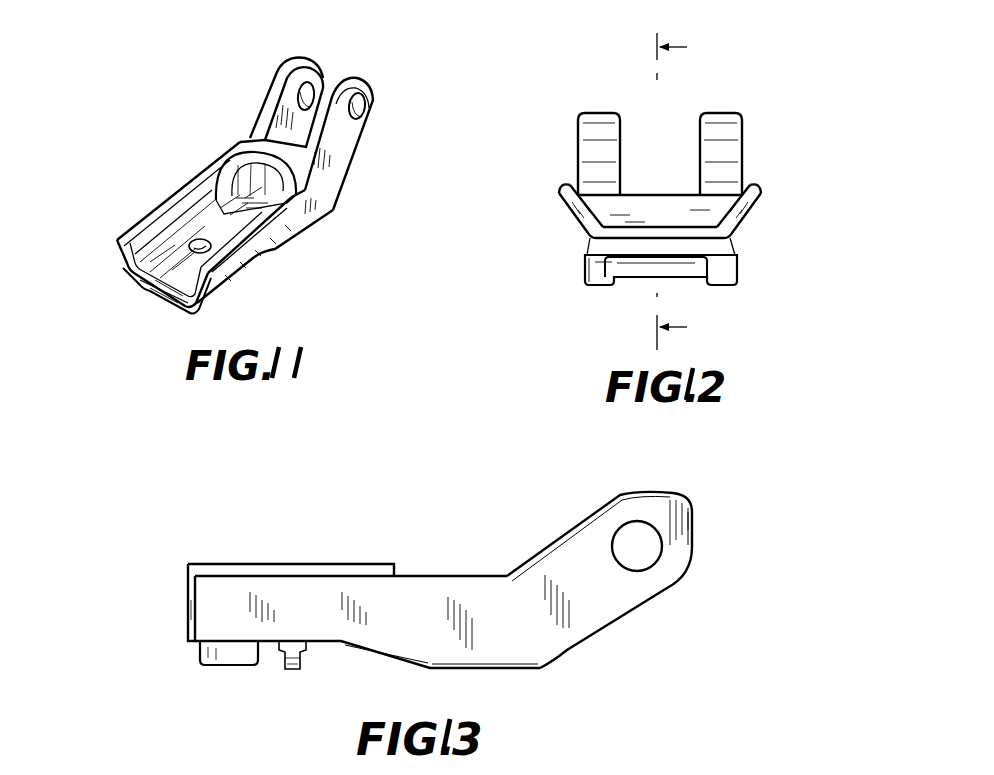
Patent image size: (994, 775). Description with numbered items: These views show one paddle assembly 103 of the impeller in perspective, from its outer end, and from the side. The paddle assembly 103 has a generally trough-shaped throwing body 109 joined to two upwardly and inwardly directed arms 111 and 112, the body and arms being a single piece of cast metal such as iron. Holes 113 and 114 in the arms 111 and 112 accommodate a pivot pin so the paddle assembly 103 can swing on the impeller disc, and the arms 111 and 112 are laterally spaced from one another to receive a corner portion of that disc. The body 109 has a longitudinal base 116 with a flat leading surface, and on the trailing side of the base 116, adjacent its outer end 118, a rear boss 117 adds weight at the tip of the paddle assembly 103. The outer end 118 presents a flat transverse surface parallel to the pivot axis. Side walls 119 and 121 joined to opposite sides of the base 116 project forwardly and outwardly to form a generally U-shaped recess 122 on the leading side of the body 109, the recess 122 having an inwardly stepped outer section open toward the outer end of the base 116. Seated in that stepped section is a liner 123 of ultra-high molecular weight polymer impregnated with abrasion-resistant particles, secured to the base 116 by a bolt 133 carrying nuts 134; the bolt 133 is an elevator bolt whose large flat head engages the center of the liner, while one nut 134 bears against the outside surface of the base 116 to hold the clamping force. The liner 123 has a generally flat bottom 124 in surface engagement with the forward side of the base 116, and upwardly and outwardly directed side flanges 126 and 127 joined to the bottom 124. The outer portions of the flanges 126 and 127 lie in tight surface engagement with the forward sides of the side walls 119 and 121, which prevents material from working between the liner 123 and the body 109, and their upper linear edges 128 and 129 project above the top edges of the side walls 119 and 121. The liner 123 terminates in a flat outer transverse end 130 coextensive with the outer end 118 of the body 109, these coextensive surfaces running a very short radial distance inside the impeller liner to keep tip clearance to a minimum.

In FIG. 11, the paddle assembly 103 is at (247, 184).
In FIG. 12, the paddle assembly 103 is at (674, 191).
In FIG. 13, the paddle assembly 103 is at (435, 579).
In FIG. 11, the throwing body 109 is at (307, 210).
In FIG. 13, the throwing body 109 is at (512, 642).
In FIG. 11, the arm 111 is at (288, 88).
In FIG. 12, the arm 111 is at (592, 138).
In FIG. 11, the arm 112 is at (372, 146).
In FIG. 12, the arm 112 is at (725, 123).
In FIG. 13, the arm 112 is at (683, 574).
In FIG. 11, the hole 113 is at (313, 82).
In FIG. 11, the hole 114 is at (368, 105).
In FIG. 13, the hole 114 is at (650, 546).
In FIG. 13, the longitudinal base 116 is at (320, 622).
In FIG. 11, the rear boss 117 is at (187, 305).
In FIG. 12, the rear boss 117 is at (673, 268).
In FIG. 13, the rear boss 117 is at (228, 666).
In FIG. 11, the outer end 118 is at (147, 293).
In FIG. 12, the outer end 118 is at (603, 260).
In FIG. 13, the outer end 118 is at (190, 620).
In FIG. 11, the side wall 119 is at (123, 263).
In FIG. 12, the side wall 119 is at (572, 235).
In FIG. 11, the side wall 121 is at (237, 260).
In FIG. 12, the side wall 121 is at (693, 233).
In FIG. 11, the recess 122 is at (222, 182).
In FIG. 11, the liner 123 is at (158, 233).
In FIG. 12, the liner 123 is at (620, 222).
In FIG. 13, the liner 123 is at (241, 560).
In FIG. 12, the bottom 124 is at (737, 265).
In FIG. 12, the side flange 126 is at (570, 212).
In FIG. 12, the side flange 127 is at (757, 215).
In FIG. 12, the upper linear edge 128 is at (570, 187).
In FIG. 12, the upper linear edge 129 is at (753, 203).
In FIG. 13, the upper linear edge 129 is at (327, 565).
In FIG. 11, the outer transverse end 130 is at (137, 280).
In FIG. 11, the bolt 133 is at (193, 252).
In FIG. 13, the nut 134 is at (290, 660).